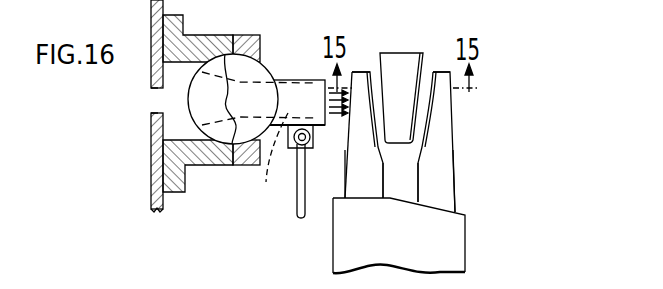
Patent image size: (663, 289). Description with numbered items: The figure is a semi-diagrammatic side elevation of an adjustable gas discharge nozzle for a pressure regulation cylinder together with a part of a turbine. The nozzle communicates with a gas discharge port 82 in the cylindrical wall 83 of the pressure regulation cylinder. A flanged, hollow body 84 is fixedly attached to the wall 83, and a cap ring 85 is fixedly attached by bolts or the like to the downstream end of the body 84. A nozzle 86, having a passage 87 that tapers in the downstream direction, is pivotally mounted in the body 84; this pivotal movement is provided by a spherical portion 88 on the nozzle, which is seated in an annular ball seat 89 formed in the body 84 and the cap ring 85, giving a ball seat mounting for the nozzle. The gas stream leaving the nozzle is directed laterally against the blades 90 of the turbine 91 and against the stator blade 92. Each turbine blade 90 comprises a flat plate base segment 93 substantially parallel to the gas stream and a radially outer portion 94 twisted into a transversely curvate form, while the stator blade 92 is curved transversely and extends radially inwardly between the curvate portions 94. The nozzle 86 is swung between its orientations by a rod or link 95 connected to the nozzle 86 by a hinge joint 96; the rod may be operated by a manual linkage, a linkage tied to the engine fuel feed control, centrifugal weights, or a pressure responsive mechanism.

The port 82 is at (155, 97).
The cylindrical wall 83 is at (155, 163).
The hollow body 84 is at (195, 40).
The cap ring 85 is at (250, 37).
The nozzle 86 is at (305, 80).
The passage 87 is at (270, 157).
The spherical portion 88 is at (223, 135).
The annular ball seat 89 is at (252, 99).
The turbine blades 90 is at (353, 137).
The turbine 91 is at (453, 237).
The stator blade 92 is at (400, 55).
The flat plate base segment 93 is at (365, 185).
The radially outer portion 94 is at (360, 75).
The rod or link 95 is at (297, 209).
The hinge joint 96 is at (297, 150).